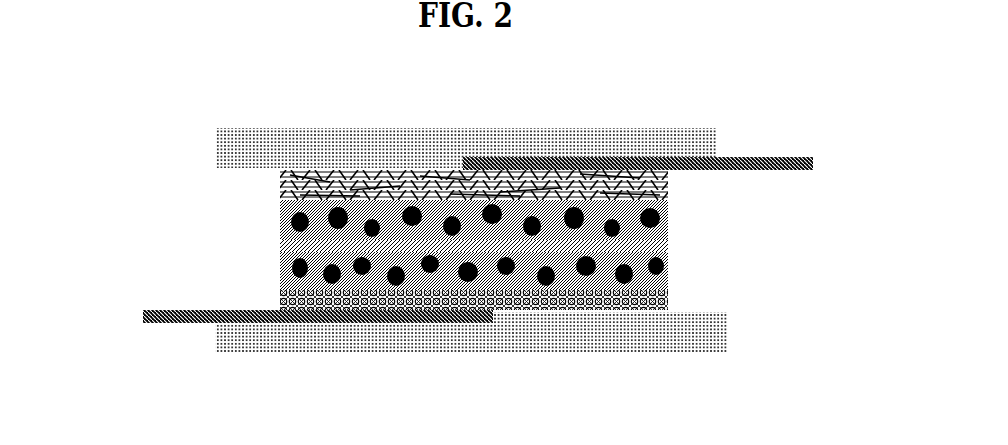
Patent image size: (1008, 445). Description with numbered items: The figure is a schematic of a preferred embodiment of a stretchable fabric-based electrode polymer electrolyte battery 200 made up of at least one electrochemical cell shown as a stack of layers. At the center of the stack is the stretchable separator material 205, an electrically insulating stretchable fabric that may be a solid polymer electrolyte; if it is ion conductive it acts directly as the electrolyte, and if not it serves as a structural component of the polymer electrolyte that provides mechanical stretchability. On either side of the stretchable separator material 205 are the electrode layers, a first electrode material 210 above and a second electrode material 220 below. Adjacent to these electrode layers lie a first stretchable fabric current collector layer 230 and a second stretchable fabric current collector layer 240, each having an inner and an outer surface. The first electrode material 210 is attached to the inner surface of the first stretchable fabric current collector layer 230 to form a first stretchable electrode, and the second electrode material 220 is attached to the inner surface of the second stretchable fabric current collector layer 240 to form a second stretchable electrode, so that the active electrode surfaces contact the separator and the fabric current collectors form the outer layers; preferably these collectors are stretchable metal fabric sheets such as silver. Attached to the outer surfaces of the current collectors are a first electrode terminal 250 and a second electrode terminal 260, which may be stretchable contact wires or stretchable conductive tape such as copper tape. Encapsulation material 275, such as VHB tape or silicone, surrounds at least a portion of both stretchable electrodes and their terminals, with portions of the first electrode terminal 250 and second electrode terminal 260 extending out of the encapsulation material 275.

The stretchable fabric-based electrode polymer electrolyte battery 200 is at (314, 416).
The stretchable separator material 205 is at (290, 240).
The first electrode material 210 is at (307, 215).
The second electrode material 220 is at (287, 260).
The first stretchable fabric current collector layer 230 is at (313, 190).
The second stretchable fabric current collector layer 240 is at (305, 293).
The first electrode terminal 250 is at (800, 158).
The second electrode terminal 260 is at (148, 315).
The encapsulation material 275 is at (350, 147).